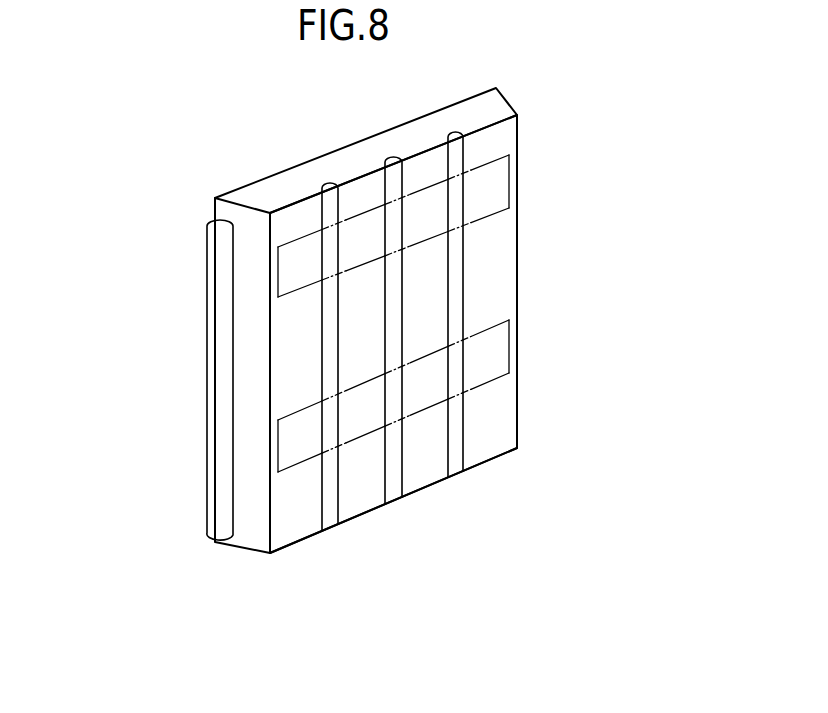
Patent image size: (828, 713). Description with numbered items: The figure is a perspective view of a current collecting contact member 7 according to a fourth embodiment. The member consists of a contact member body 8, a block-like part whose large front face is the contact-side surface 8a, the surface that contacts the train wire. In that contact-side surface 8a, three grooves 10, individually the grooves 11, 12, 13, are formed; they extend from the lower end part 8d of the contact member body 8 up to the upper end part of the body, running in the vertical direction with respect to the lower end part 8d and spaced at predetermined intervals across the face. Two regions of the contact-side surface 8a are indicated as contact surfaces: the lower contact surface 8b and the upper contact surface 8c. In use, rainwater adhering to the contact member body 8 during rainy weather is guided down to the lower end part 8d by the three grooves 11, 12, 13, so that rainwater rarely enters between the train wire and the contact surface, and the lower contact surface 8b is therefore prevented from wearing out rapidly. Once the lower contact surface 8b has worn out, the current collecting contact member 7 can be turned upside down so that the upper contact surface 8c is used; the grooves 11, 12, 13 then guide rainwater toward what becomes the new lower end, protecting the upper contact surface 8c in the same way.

The current collecting contact member 7 is at (173, 313).
The contact member body 8 is at (237, 212).
The contact-side surface 8a is at (500, 265).
The lower contact surface 8b is at (511, 353).
The upper contact surface 8c is at (511, 160).
The lower end part 8d is at (280, 557).
The grooves 10 is at (493, 538).
The groove 11 is at (457, 378).
The groove 12 is at (392, 403).
The groove 13 is at (330, 433).